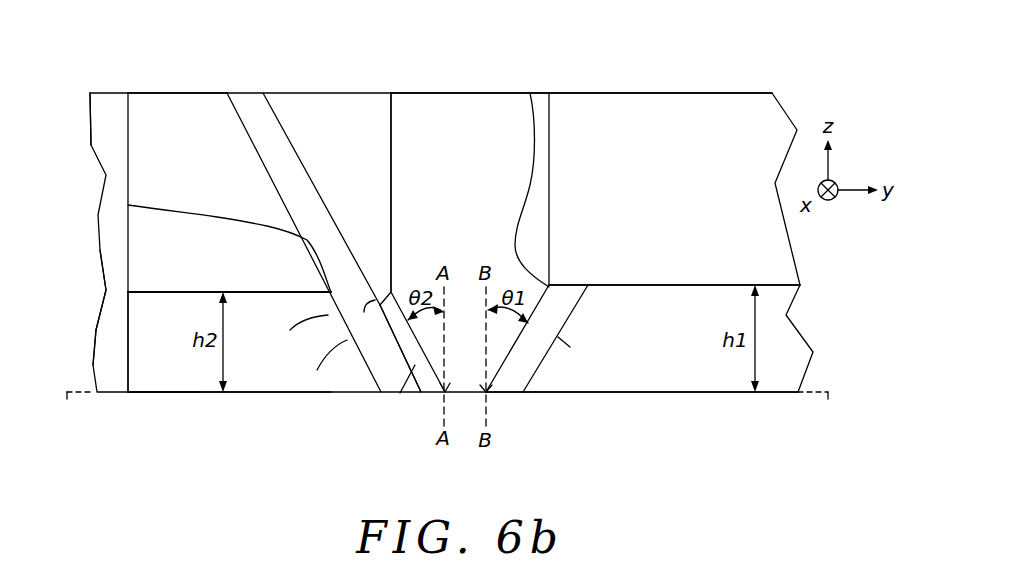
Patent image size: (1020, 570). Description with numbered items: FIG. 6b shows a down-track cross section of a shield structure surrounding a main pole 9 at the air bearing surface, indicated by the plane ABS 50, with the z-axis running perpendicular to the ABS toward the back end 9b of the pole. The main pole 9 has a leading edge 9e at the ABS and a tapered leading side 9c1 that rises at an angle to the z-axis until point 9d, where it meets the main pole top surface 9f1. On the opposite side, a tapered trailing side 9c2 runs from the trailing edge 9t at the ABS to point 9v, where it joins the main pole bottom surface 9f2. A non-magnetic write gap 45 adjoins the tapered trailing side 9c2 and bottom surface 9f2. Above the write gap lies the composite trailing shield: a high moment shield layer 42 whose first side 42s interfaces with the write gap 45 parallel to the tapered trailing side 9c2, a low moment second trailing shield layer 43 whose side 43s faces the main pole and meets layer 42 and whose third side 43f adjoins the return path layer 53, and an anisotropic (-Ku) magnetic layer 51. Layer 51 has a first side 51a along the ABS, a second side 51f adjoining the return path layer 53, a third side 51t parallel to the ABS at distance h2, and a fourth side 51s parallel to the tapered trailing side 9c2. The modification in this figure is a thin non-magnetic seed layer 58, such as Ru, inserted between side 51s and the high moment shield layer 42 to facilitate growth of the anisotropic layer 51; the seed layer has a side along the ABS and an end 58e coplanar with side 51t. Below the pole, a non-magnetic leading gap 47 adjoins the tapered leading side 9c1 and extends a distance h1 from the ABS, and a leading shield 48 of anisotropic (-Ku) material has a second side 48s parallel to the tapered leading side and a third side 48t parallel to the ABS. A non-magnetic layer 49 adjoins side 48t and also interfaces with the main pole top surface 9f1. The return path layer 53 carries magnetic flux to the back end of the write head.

The main pole 9 is at (427, 108).
The back end of the main pole 9b is at (478, 93).
The tapered leading side 9c1 is at (530, 93).
The tapered trailing side 9c2 is at (397, 357).
The point where tapered leading side connects with top surface 9d is at (550, 290).
The leading edge 9e is at (488, 393).
The main pole top surface 9f1 is at (549, 123).
The main pole bottom surface 9f2 is at (391, 130).
The trailing edge 9t is at (446, 393).
The point where tapered trailing side connects with bottom surface 9v is at (364, 312).
The high moment shield layer 42 is at (272, 130).
The first side of high moment shield layer 42s is at (365, 372).
The second trailing shield layer 43 is at (165, 108).
The third side of second trailing shield layer 43f is at (127, 142).
The side of second trailing shield layer facing the main pole 43s is at (248, 118).
The write gap 45 is at (433, 393).
The leading gap 47 is at (516, 387).
The leading shield 48 is at (673, 373).
The second side of leading shield 48s is at (558, 337).
The third side of leading shield 48t is at (778, 283).
The non-magnetic layer 49 is at (685, 108).
The ABS 50 is at (446, 407).
The anisotropic (-Ku) magnetic layer 51 is at (203, 392).
The first side of anisotropic (-Ku) magnetic layer 51a is at (165, 392).
The second side of anisotropic (-Ku) magnetic layer 51f is at (127, 313).
The fourth side of anisotropic (-Ku) magnetic layer 51s is at (290, 330).
The third side of anisotropic (-Ku) magnetic layer 51t is at (158, 292).
The return path layer 53 is at (107, 339).
The seed layer 58 is at (317, 370).
The end of seed layer 58e is at (128, 205).